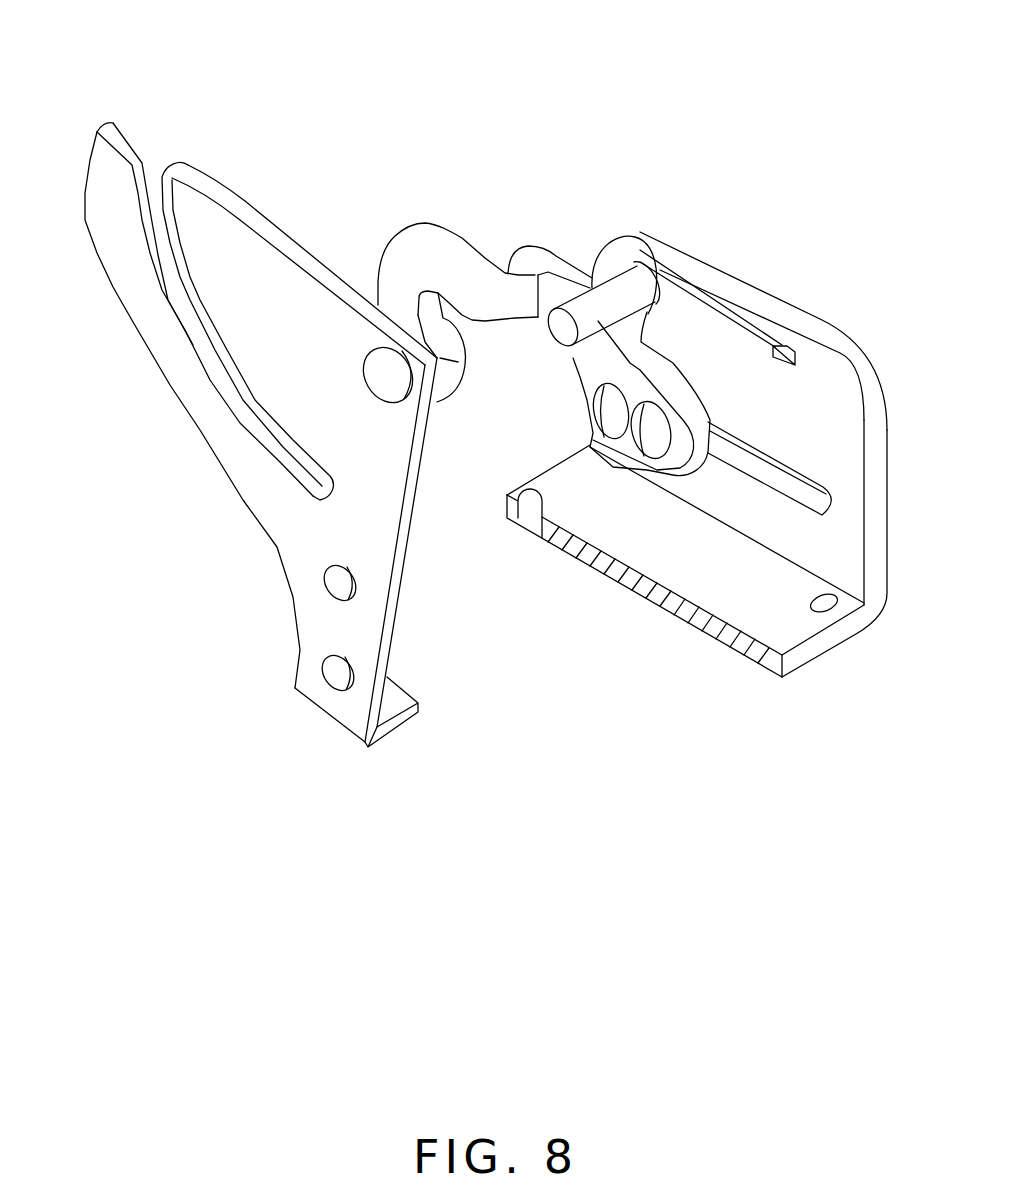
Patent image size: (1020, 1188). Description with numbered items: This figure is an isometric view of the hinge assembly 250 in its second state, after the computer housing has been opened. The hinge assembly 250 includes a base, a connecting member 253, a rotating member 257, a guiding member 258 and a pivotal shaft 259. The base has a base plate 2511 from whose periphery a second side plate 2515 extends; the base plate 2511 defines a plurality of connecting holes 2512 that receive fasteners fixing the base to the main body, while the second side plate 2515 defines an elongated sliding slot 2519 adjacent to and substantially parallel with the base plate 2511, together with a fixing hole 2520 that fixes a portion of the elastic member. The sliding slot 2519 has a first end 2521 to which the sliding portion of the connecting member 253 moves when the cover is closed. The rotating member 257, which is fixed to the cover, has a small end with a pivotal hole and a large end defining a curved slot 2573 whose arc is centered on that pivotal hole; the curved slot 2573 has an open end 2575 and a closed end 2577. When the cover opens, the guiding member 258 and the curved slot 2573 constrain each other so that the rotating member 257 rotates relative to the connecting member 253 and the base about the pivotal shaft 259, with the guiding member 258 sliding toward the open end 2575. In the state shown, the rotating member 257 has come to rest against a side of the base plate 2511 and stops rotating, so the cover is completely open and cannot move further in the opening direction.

The hinge assembly 250 is at (583, 157).
The connecting member 253 is at (460, 253).
The rotating member 257 is at (150, 312).
The curved slot 2573 is at (210, 367).
The open end 2575 is at (155, 182).
The closed end 2577 is at (313, 497).
The pivotal shaft 259 is at (388, 372).
The guiding member 258 is at (630, 295).
The base plate 2511 is at (610, 523).
The connecting holes 2512 is at (826, 603).
The second side plate 2515 is at (718, 283).
The elongated sliding slot 2519 is at (705, 530).
The fixing hole 2520 is at (793, 350).
The first end 2521 is at (820, 506).